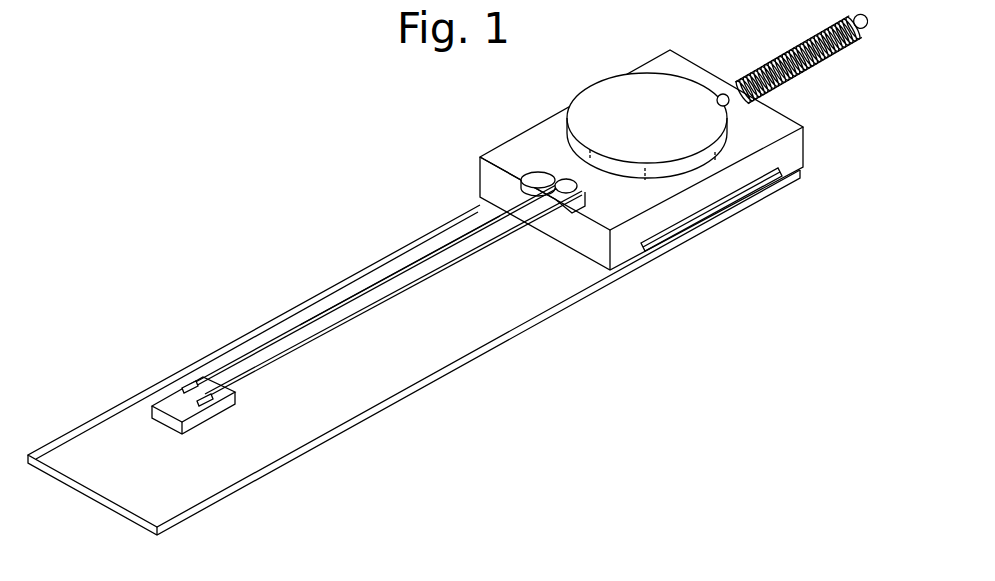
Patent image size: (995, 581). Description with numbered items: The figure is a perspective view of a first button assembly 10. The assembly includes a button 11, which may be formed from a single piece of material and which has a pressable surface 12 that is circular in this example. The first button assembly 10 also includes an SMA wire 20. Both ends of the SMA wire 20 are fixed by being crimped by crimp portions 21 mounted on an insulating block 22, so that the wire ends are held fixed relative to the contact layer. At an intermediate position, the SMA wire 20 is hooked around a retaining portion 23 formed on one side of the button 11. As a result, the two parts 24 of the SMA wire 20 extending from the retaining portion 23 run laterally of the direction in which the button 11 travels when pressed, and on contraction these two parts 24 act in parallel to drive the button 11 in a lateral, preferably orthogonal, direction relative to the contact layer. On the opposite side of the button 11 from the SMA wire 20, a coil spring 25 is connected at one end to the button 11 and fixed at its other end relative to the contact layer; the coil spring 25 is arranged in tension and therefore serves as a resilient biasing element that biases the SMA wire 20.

The first button assembly 10 is at (356, 236).
The button 11 is at (630, 217).
The pressable surface 12 is at (592, 110).
The SMA wire 20 is at (437, 255).
The crimp portions 21 is at (190, 383).
The insulating block 22 is at (157, 417).
The retaining portion 23 is at (563, 167).
The parts of the SMA wire 24 is at (281, 340).
The coil spring 25 is at (827, 67).